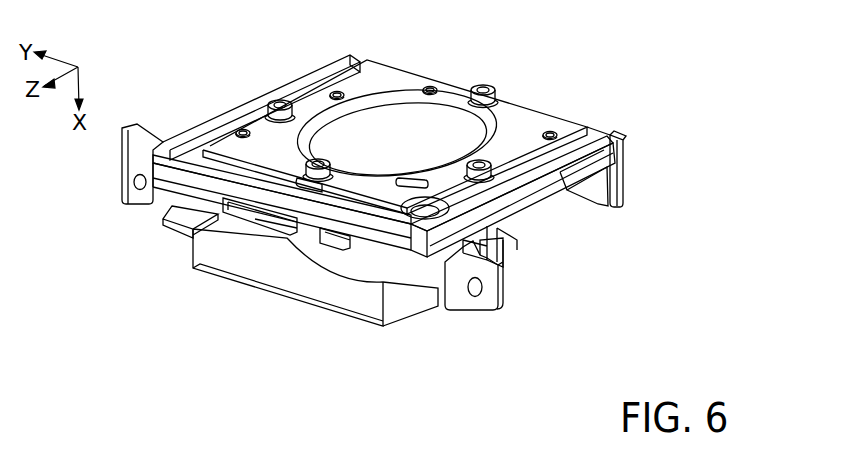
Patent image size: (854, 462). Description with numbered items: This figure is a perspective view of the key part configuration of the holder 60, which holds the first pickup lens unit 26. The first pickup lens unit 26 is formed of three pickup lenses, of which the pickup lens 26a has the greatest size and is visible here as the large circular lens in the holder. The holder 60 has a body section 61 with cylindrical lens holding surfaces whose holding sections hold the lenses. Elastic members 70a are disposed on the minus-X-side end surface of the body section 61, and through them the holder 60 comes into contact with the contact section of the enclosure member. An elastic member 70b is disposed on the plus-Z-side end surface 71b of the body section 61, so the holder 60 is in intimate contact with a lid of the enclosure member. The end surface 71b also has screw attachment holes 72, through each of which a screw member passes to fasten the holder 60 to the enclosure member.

The holder 60 is at (393, 203).
The elastic members 70a is at (233, 110).
The elastic member 70b is at (173, 168).
The +Z-side end surface 71b is at (380, 240).
The body section 61 is at (507, 282).
The screw attachment holes 72 is at (130, 190).
The first pickup lens unit 26 is at (395, 133).
The pickup lens 26a is at (397, 107).